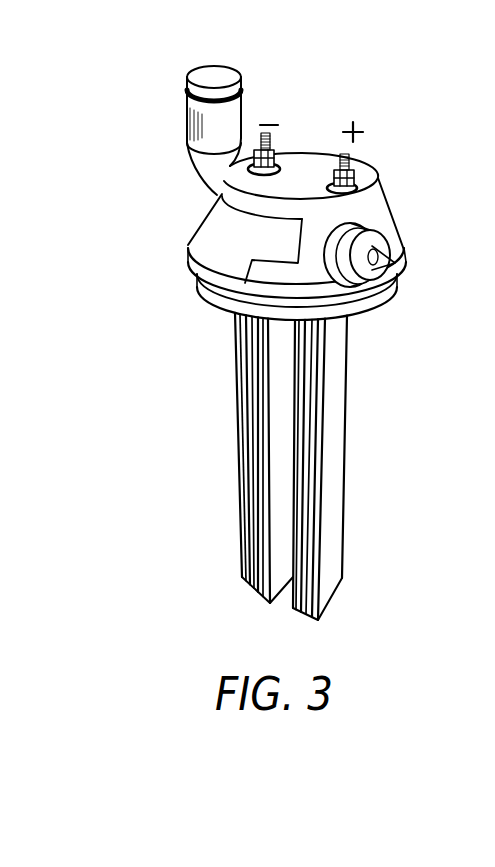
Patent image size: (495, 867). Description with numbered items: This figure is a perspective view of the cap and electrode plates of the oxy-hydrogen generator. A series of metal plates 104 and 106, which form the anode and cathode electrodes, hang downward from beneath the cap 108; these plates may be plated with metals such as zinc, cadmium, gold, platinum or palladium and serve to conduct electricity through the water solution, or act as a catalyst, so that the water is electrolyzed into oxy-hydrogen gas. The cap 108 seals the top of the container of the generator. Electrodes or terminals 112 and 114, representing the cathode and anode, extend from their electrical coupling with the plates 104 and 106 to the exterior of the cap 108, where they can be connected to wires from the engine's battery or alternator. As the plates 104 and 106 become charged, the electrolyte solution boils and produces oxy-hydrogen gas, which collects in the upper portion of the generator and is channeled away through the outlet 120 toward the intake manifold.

The metal plate 104 is at (345, 487).
The metal plate 106 is at (247, 402).
The cap 108 is at (317, 258).
The terminal 112 is at (275, 152).
The terminal 114 is at (355, 162).
The outlet 120 is at (238, 80).